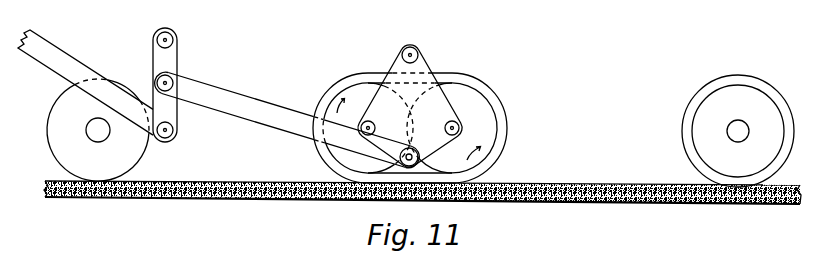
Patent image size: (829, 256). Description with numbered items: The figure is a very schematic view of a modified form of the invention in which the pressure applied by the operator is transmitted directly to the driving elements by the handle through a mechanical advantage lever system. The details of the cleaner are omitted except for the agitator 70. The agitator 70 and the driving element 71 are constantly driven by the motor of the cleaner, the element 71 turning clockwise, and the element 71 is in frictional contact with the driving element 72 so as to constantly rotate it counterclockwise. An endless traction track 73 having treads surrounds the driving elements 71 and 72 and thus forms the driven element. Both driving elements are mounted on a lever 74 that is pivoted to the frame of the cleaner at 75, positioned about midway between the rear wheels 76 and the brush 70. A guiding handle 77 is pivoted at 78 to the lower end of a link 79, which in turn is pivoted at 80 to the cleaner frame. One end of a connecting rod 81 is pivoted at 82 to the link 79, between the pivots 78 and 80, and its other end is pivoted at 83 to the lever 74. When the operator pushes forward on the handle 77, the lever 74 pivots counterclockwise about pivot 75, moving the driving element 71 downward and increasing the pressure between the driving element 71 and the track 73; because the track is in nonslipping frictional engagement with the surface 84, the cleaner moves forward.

The agitator 70 is at (777, 89).
The driving element 71 is at (354, 74).
The driving element 72 is at (483, 118).
The endless traction track 73 is at (508, 129).
The lever 74 is at (437, 72).
The pivot 75 is at (412, 47).
The rear wheels 76 is at (146, 153).
The guiding handle 77 is at (77, 61).
The pivot 78 is at (173, 130).
The link 79 is at (153, 52).
The pivot 80 is at (173, 40).
The connecting rod 81 is at (288, 111).
The pivot 82 is at (173, 83).
The pivot 83 is at (437, 131).
The surface 84 is at (286, 181).